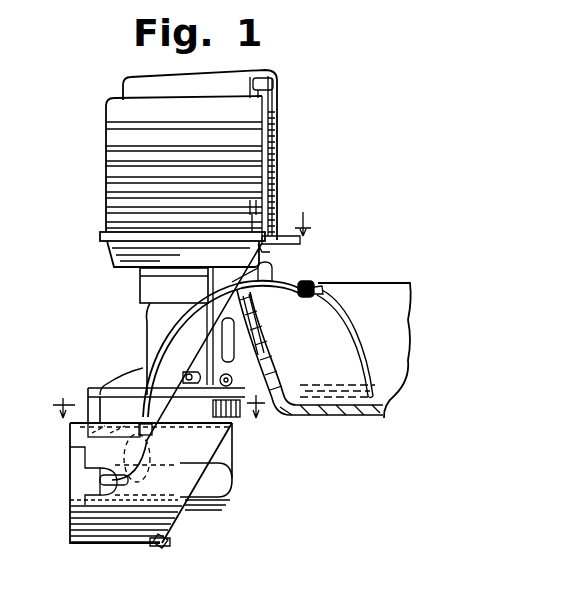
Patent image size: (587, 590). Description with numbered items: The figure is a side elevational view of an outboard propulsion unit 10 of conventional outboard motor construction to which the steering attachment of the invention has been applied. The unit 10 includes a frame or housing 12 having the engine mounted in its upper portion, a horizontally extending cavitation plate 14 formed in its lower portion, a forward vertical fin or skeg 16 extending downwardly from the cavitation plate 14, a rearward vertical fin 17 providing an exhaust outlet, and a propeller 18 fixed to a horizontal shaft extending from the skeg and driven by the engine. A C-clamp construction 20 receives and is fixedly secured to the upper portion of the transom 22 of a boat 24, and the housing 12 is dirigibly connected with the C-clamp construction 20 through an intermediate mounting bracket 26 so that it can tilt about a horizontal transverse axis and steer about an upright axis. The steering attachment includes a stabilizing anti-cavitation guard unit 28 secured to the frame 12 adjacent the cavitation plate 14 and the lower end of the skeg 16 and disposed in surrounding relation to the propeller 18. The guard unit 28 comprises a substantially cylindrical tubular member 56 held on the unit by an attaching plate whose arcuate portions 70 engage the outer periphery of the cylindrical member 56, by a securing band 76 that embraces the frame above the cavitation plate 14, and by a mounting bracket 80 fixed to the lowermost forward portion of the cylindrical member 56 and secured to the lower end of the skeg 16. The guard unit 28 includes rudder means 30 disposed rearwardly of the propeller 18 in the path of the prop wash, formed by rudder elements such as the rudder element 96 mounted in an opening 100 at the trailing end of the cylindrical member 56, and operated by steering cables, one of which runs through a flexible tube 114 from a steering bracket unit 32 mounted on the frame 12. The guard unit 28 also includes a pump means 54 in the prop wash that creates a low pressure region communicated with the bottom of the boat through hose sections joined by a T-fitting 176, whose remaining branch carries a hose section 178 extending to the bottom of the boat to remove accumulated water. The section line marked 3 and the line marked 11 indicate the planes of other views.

The outboard propulsion unit 10 is at (328, 62).
The frame or housing 12 is at (112, 170).
The section line 11 is at (305, 214).
The steering bracket unit 32 is at (310, 247).
The C-clamp construction 20 is at (273, 270).
The flexible tube 114 is at (178, 344).
The cavitation plate 14 is at (143, 368).
The pump means 54 is at (129, 417).
The section line 3 is at (159, 399).
The securing band 76 is at (234, 423).
The rearward vertical fin 17 is at (70, 440).
The opening 100 is at (80, 457).
The rudder means 30 is at (65, 491).
The rudder element 96 is at (74, 503).
The cylindrical member 56 is at (88, 527).
The propeller 18 is at (140, 533).
The arcuate portion 70 is at (200, 428).
The stabilizing anti-cavitation guard unit 28 is at (231, 453).
The skeg 16 is at (194, 508).
The mounting bracket 80 is at (163, 544).
The transom 22 is at (264, 333).
The intermediate mounting bracket 26 is at (224, 346).
The boat 24 is at (398, 296).
The T-fitting 176 is at (318, 290).
The hose section 178 is at (364, 345).